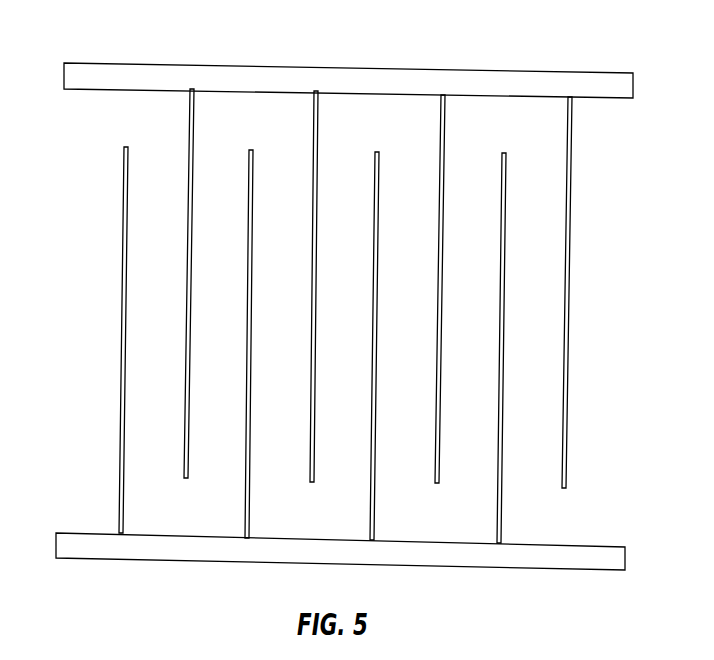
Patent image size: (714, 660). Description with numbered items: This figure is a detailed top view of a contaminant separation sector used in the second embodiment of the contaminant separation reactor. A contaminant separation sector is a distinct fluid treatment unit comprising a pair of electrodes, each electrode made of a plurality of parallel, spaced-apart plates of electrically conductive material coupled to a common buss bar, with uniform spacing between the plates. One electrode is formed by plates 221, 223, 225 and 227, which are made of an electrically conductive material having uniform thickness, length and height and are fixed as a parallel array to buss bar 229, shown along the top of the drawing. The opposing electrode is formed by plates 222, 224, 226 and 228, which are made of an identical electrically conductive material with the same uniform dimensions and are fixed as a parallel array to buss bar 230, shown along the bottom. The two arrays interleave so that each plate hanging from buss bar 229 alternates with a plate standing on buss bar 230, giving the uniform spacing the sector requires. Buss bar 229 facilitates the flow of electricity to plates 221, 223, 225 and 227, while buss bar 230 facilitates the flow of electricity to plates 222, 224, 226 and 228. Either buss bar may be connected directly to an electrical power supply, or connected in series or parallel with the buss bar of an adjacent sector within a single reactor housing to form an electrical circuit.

The plate 221 is at (141, 283).
The plate 222 is at (74, 340).
The plate 223 is at (266, 286).
The plate 224 is at (199, 344).
The plate 225 is at (394, 289).
The plate 226 is at (324, 346).
The plate 227 is at (520, 292).
The plate 228 is at (452, 348).
The buss bar 229 is at (376, 63).
The buss bar 230 is at (369, 534).